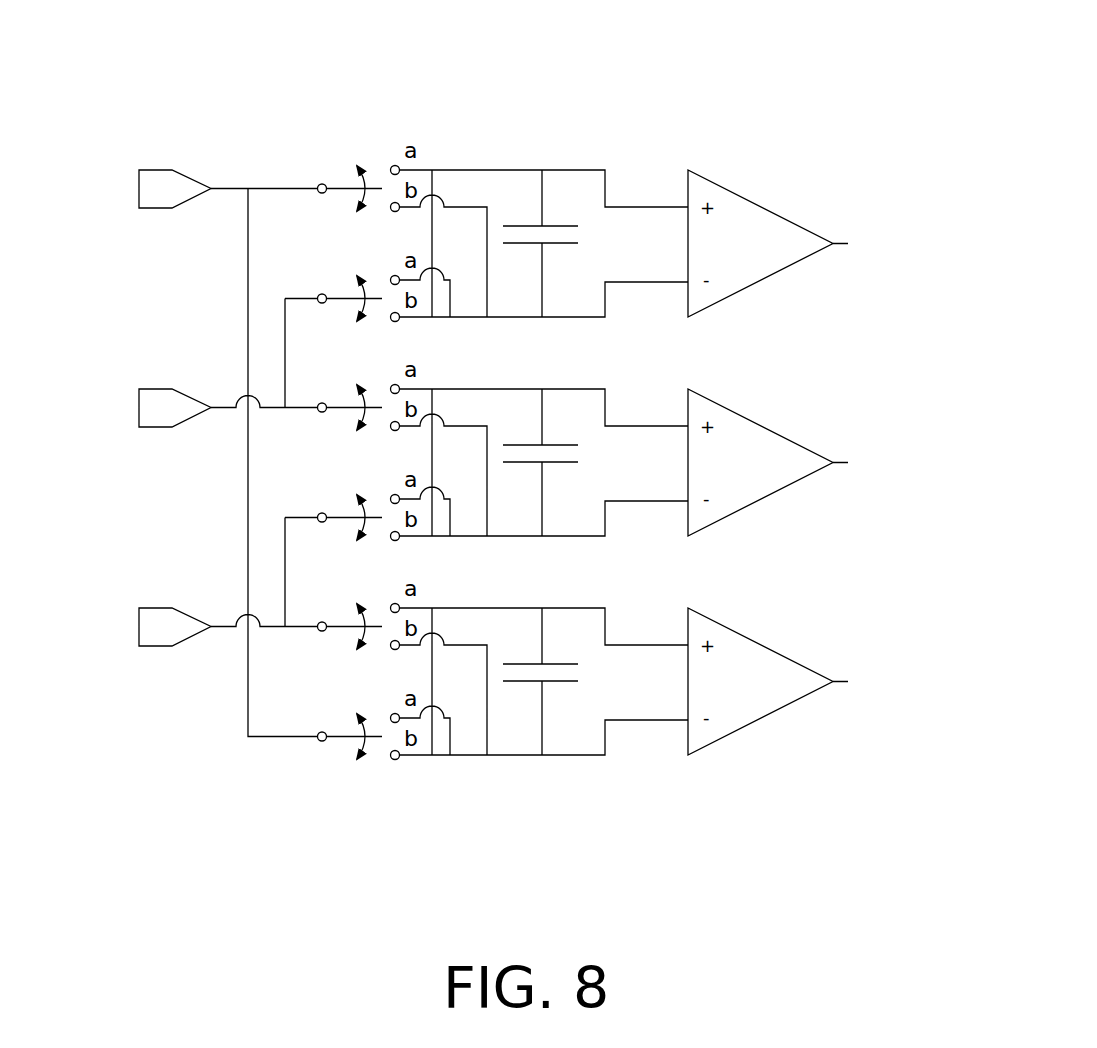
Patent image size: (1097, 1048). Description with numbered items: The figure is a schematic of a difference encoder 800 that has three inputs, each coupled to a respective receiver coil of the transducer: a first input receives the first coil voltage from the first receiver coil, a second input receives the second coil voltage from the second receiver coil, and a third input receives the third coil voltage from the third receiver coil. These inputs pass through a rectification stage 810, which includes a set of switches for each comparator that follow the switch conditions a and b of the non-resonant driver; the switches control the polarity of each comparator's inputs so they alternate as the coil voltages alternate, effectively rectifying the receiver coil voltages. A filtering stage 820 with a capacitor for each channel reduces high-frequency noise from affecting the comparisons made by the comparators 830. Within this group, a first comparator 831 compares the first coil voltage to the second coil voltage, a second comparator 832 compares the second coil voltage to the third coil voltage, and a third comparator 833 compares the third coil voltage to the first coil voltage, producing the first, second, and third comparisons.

The difference encoder 800 is at (131, 53).
The rectification stage 810 is at (447, 122).
The filtering stage 820 is at (585, 122).
The comparators 830 is at (960, 122).
The first comparator 831 is at (772, 202).
The second comparator 832 is at (772, 421).
The third comparator 833 is at (772, 640).